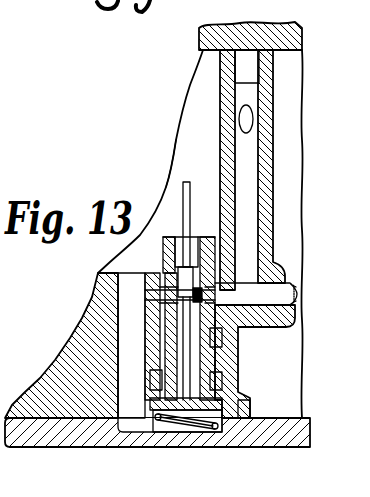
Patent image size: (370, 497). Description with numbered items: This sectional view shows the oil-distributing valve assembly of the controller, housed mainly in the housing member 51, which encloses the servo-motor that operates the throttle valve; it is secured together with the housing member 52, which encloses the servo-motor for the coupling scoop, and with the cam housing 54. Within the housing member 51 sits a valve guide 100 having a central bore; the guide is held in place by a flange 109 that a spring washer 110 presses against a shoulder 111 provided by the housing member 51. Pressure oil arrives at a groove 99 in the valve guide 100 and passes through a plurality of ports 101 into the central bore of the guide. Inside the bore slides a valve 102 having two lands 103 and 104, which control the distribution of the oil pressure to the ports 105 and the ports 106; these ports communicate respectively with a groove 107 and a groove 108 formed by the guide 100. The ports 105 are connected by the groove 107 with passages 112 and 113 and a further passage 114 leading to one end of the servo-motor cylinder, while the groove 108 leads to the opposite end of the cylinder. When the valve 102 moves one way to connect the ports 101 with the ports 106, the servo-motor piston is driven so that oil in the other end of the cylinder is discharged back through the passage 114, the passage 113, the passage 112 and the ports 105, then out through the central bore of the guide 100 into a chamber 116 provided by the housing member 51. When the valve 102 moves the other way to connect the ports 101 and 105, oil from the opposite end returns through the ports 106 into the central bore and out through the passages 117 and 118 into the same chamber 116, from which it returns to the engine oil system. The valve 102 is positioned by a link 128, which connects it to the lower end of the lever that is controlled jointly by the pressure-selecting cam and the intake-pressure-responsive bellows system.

The housing member 51 is at (340, 192).
The housing member 52 is at (290, 30).
The cam housing 54 is at (303, 437).
The groove 99 is at (160, 355).
The valve guide 100 is at (128, 447).
The ports 101 is at (165, 340).
The valve 102 is at (163, 246).
The land 103 is at (165, 263).
The land 104 is at (250, 408).
The ports 105 is at (165, 304).
The ports 106 is at (160, 392).
The groove 107 is at (162, 290).
The groove 108 is at (163, 375).
The flange 109 is at (112, 447).
The spring washer 110 is at (160, 447).
The shoulder 111 is at (70, 447).
The passage 112 is at (268, 300).
The passage 113 is at (247, 237).
The passage 114 is at (249, 119).
The chamber 116 is at (167, 184).
The passage 117 is at (224, 432).
The passage 118 is at (120, 326).
The link 128 is at (201, 166).